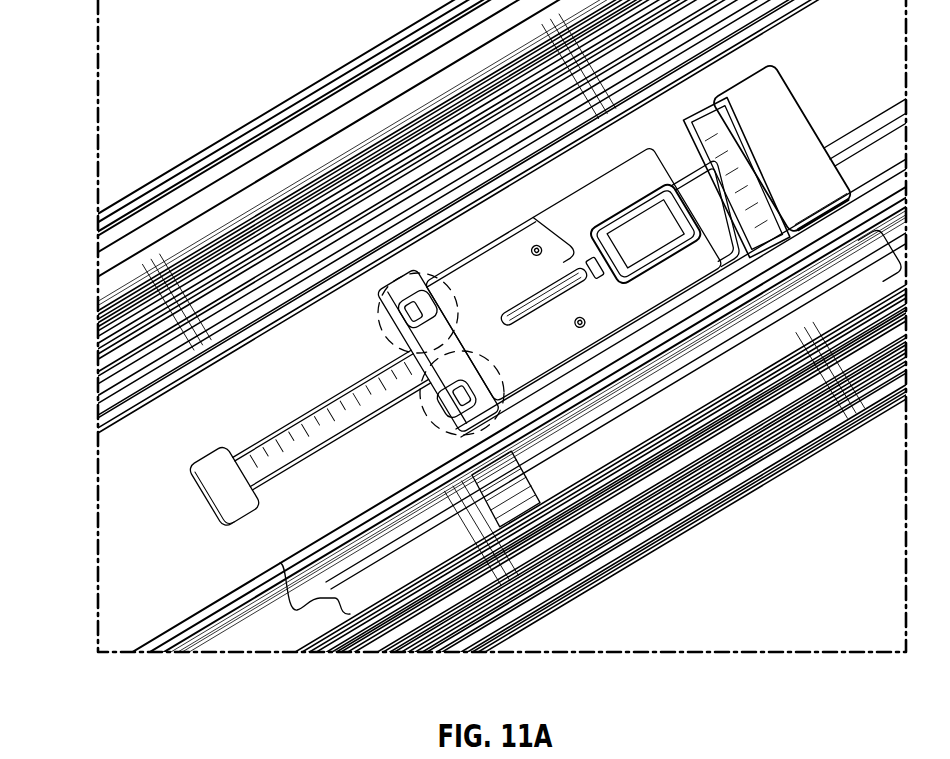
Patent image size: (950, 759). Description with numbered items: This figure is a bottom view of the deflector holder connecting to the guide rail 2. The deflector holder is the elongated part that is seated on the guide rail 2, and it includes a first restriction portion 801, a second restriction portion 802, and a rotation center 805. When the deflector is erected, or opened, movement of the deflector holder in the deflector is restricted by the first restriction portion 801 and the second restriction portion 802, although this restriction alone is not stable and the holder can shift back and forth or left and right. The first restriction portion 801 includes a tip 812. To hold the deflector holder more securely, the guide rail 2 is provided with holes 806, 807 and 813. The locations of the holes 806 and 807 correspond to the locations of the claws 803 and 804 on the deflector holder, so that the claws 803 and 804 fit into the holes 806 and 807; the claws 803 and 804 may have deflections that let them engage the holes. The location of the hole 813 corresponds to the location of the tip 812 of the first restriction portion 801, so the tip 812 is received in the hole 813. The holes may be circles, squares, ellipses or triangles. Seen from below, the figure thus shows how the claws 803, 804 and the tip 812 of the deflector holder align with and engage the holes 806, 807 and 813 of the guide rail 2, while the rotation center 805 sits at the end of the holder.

The guide rail 2 is at (185, 578).
The first restriction portion 801 is at (291, 442).
The second restriction portion 802 is at (498, 280).
The claw 803 is at (490, 382).
The claw 804 is at (430, 312).
The rotation center 805 is at (703, 218).
The hole 806 is at (388, 320).
The hole 807 is at (432, 411).
The tip 812 is at (217, 527).
The hole 813 is at (195, 505).